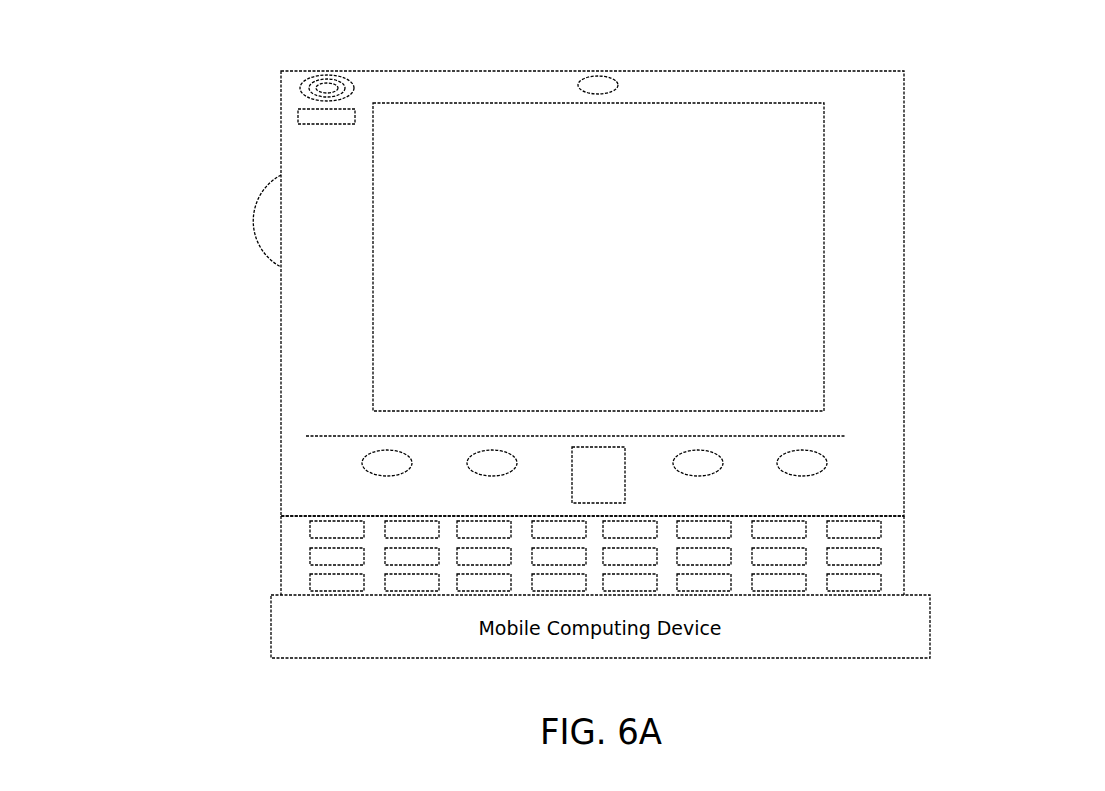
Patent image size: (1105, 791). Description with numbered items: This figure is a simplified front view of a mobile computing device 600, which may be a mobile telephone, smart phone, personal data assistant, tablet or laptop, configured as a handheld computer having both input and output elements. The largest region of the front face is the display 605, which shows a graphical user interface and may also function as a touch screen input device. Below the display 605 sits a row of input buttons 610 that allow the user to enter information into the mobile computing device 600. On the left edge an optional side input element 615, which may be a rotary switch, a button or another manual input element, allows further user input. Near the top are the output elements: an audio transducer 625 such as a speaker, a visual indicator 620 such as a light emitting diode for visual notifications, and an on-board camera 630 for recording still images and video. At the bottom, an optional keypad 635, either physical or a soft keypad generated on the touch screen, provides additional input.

The mobile computing device 600 is at (890, 81).
The display 605 is at (514, 357).
The input buttons 610 is at (600, 478).
The side input element 615 is at (258, 220).
The visual indicator 620 is at (298, 118).
The audio transducer 625 is at (300, 88).
The on-board camera 630 is at (618, 87).
The keypad 635 is at (290, 586).